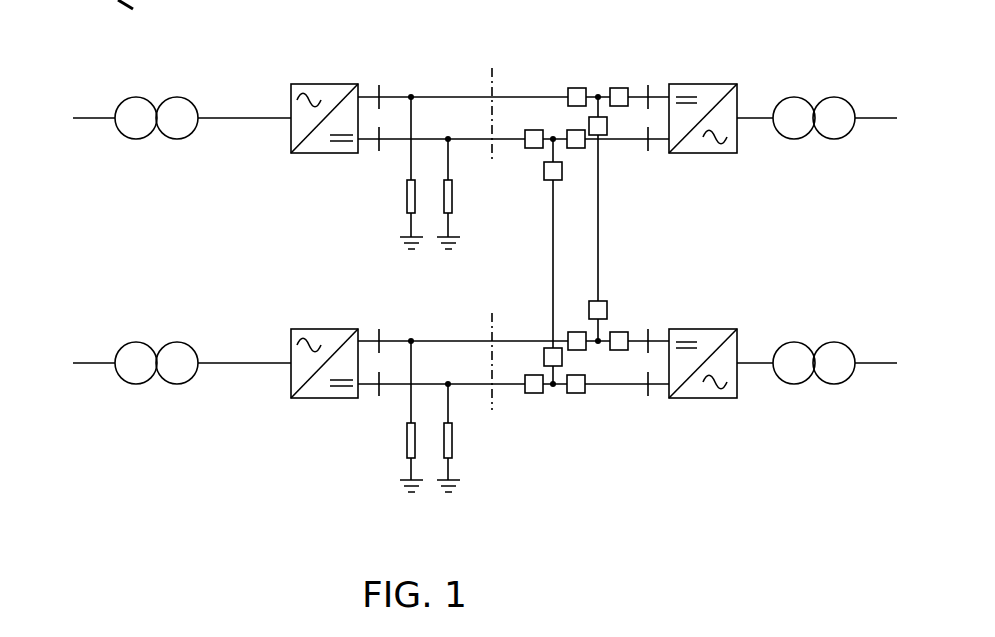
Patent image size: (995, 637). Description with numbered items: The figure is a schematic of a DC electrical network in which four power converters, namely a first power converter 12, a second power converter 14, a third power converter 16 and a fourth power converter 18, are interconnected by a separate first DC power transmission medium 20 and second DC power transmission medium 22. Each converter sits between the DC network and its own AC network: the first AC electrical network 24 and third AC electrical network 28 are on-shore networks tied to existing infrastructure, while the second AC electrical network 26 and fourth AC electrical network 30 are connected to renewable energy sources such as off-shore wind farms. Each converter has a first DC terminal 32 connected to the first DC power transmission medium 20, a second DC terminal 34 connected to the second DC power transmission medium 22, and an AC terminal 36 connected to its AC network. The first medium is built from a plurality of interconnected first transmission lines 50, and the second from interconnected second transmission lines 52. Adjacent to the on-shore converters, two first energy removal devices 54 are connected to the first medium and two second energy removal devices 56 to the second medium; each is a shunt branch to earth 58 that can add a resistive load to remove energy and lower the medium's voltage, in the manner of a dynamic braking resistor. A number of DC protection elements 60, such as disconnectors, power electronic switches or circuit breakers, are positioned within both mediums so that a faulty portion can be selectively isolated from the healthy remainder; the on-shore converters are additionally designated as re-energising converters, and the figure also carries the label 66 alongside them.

The first power converter 12 is at (336, 83).
The second power converter 14 is at (710, 84).
The third power converter 16 is at (315, 388).
The fourth power converter 18 is at (708, 388).
The first DC power transmission medium 20 is at (532, 93).
The second DC power transmission medium 22 is at (428, 96).
The first AC electrical network 24 is at (136, 140).
The second AC electrical network 26 is at (832, 140).
The third AC electrical network 28 is at (136, 385).
The fourth AC electrical network 30 is at (832, 385).
The first DC terminal 32 is at (374, 86).
The second DC terminal 34 is at (363, 143).
The AC terminal 36 is at (290, 122).
The first transmission line 50 is at (562, 90).
The second transmission line 52 is at (468, 136).
The first energy removal device 54 is at (410, 200).
The second energy removal device 56 is at (452, 197).
The earth 58 is at (448, 255).
The DC protection element 60 is at (619, 87).
The converter 66 is at (318, 245).